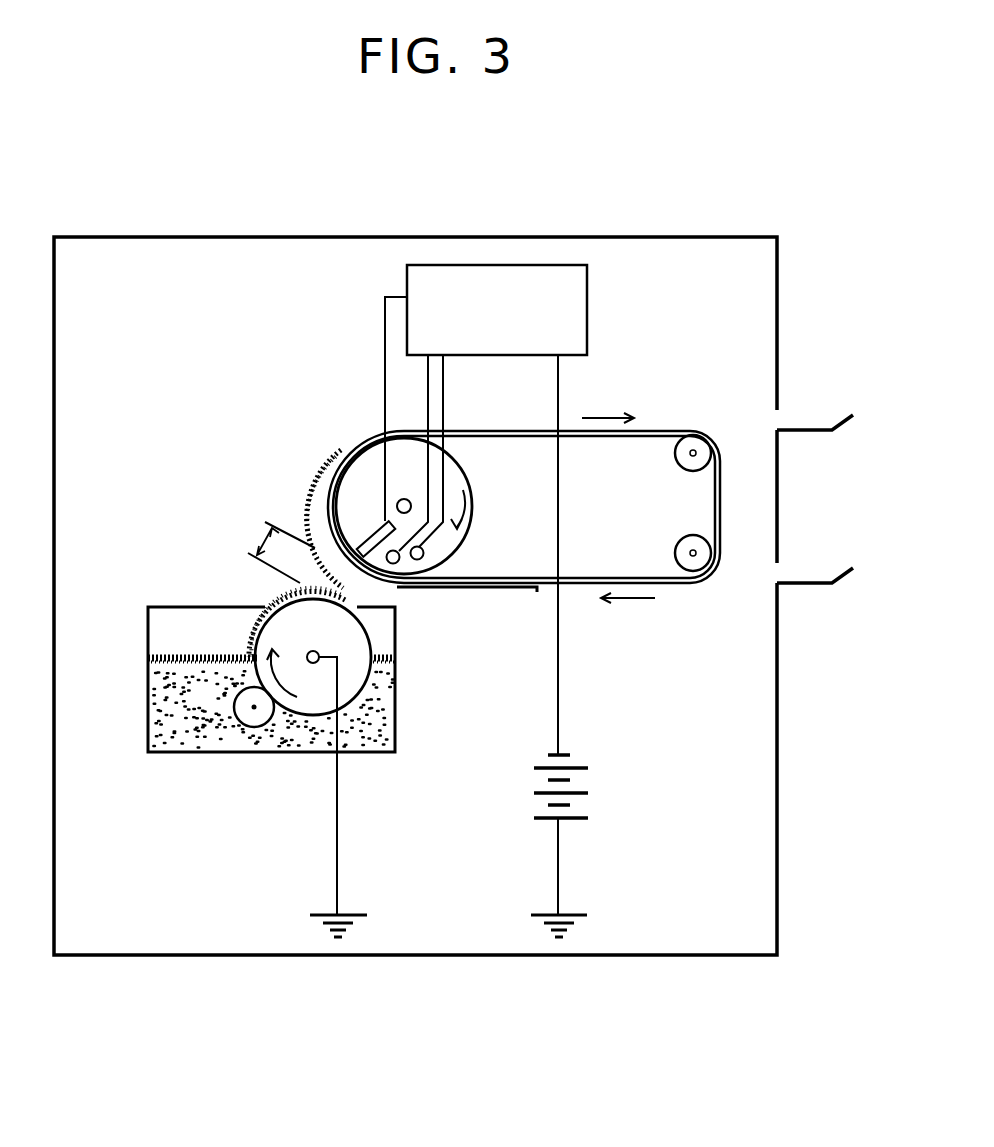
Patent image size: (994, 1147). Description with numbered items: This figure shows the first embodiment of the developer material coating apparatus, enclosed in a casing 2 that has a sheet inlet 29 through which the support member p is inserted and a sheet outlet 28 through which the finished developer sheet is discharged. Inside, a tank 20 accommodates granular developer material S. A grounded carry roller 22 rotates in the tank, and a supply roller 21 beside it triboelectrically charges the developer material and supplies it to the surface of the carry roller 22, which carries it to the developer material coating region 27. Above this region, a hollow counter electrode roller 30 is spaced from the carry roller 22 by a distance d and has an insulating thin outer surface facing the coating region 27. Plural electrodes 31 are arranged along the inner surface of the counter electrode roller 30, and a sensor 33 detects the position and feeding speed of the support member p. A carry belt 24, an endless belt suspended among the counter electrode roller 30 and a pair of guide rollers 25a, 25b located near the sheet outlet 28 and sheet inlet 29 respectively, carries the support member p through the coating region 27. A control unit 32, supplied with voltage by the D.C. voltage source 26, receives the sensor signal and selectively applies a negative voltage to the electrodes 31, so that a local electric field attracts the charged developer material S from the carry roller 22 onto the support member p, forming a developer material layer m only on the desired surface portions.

The housing 2 is at (130, 237).
The tank 20 is at (146, 718).
The supply roller 21 is at (255, 727).
The carry roller 22 is at (358, 638).
The carry belt 24 is at (670, 431).
The guide roller 25a is at (687, 457).
The guide roller 25b is at (687, 553).
The D.C. voltage source 26 is at (583, 782).
The developer material coating region 27 is at (352, 588).
The sheet outlet 28 is at (798, 421).
The sheet inlet 29 is at (797, 573).
The counter electrode roller 30 is at (464, 488).
The electrodes 31 is at (375, 527).
The control unit 32 is at (589, 296).
The sensor 33 is at (432, 551).
The developer material layer m is at (321, 504).
The distance d is at (276, 549).
The developer material S is at (198, 657).
The support member p is at (506, 591).